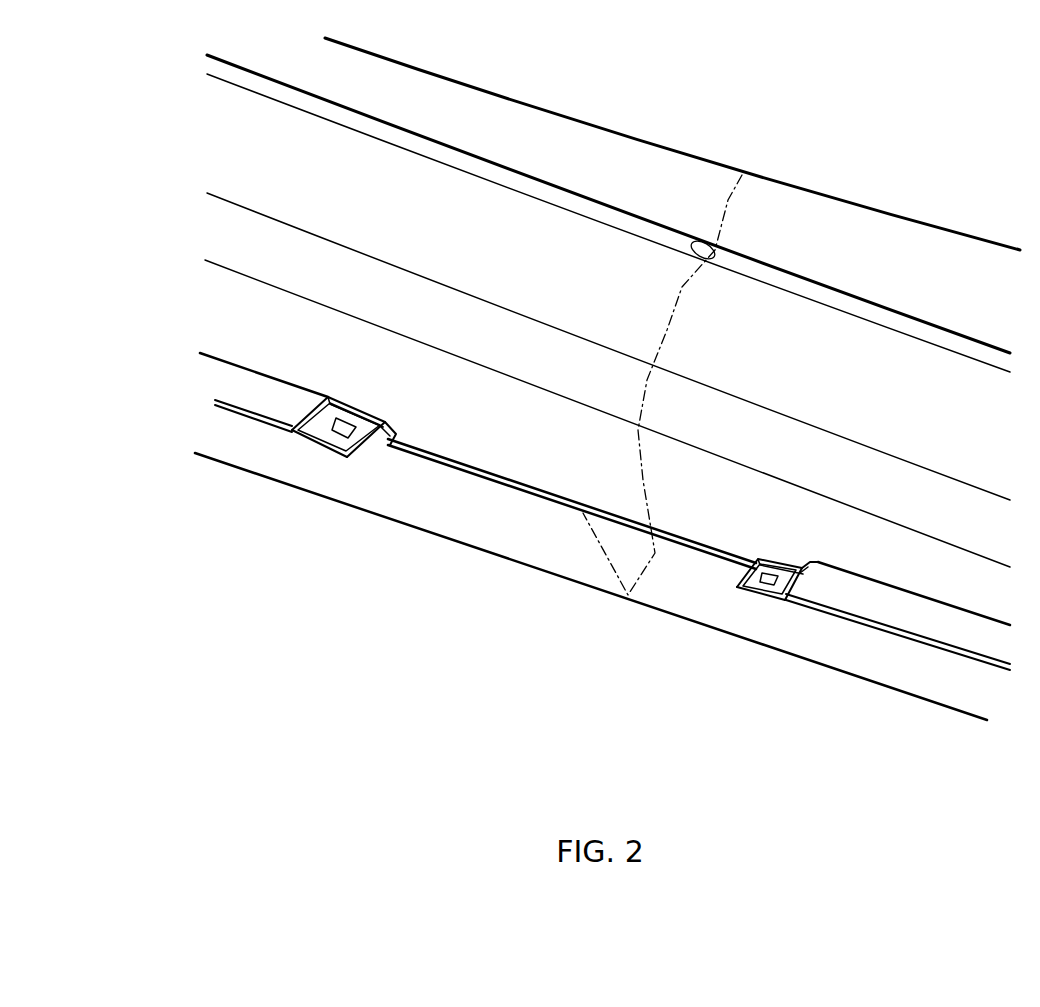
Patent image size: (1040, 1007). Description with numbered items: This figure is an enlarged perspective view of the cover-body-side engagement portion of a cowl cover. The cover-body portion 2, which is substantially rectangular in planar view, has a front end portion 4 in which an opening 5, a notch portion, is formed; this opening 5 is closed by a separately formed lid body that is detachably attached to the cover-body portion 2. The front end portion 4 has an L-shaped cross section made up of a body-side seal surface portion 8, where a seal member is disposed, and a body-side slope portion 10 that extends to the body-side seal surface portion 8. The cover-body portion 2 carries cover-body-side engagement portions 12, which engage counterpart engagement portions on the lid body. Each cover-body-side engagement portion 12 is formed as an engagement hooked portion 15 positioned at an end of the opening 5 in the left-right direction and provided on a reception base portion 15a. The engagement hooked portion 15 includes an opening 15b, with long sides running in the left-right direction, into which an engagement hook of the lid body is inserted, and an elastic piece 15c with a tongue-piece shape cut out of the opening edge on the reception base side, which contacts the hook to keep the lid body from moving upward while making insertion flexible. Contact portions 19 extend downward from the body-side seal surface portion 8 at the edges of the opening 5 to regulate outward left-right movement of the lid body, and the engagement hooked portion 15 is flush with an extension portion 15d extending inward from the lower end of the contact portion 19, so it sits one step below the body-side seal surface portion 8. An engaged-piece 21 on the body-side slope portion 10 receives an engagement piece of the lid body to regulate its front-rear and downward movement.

The cover-body portion 2 is at (897, 153).
The front end portion 4 is at (212, 466).
The opening 5 is at (457, 496).
The body-side seal surface portion 8 is at (243, 388).
The body-side slope portion 10 is at (235, 442).
The cover-body-side engagement portion 12 is at (742, 612).
The engagement hooked portion 15 is at (376, 405).
The reception base portion 15a is at (382, 440).
The opening 15b is at (324, 399).
The elastic piece 15c is at (332, 430).
The extension portion 15d is at (330, 442).
The contact portion 19 is at (292, 440).
The engaged-piece 21 is at (437, 480).